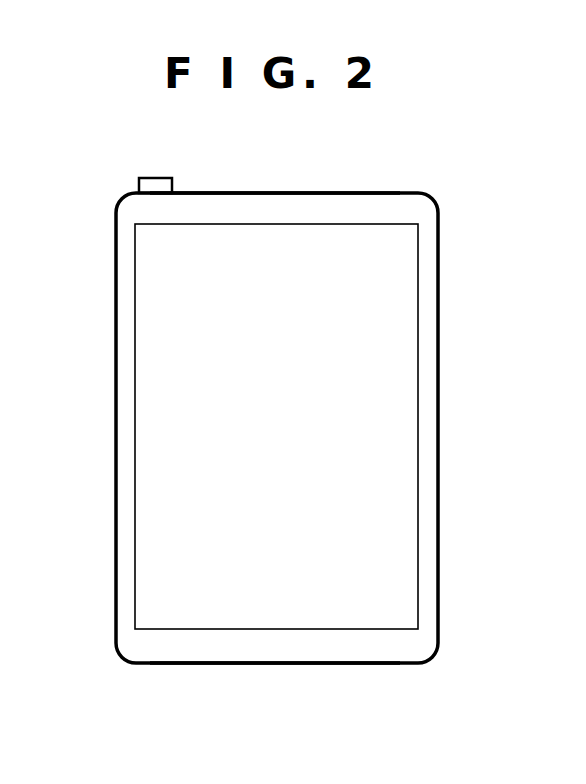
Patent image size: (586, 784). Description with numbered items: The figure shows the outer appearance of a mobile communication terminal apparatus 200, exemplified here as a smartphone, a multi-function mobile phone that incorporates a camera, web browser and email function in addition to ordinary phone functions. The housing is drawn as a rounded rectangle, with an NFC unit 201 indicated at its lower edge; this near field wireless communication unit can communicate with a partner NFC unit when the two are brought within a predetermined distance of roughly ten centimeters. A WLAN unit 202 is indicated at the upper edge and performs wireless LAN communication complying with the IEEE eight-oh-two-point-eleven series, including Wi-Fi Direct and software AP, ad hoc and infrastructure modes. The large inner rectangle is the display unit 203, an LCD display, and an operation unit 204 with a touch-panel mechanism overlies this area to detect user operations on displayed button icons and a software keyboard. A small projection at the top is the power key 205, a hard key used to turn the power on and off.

The mobile communication terminal apparatus 200 is at (466, 180).
The NFC unit 201 is at (288, 643).
The WLAN unit 202 is at (395, 193).
The display unit 203 is at (135, 269).
The operation unit 204 is at (402, 495).
The power key 205 is at (152, 178).